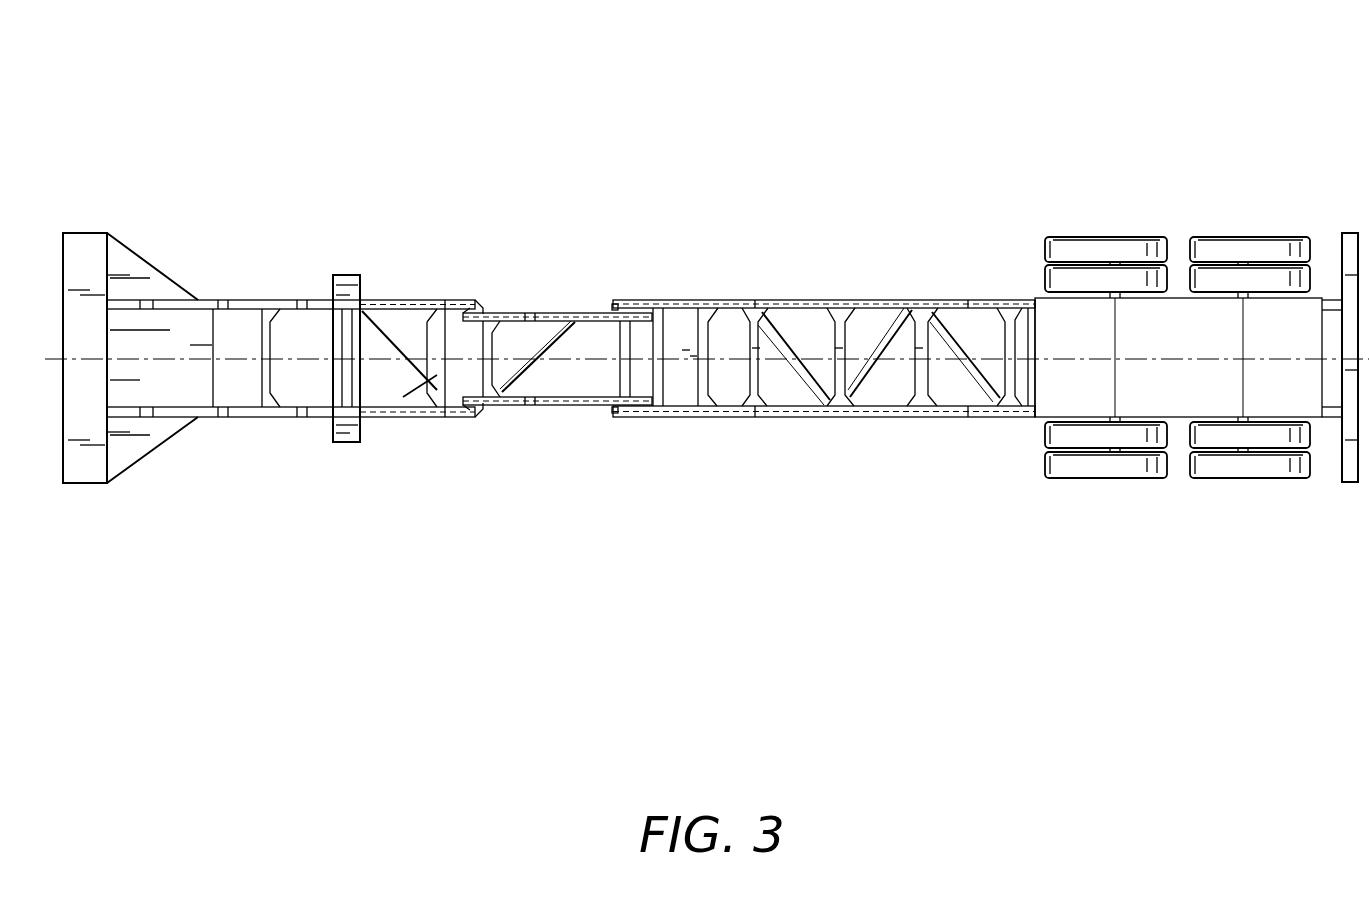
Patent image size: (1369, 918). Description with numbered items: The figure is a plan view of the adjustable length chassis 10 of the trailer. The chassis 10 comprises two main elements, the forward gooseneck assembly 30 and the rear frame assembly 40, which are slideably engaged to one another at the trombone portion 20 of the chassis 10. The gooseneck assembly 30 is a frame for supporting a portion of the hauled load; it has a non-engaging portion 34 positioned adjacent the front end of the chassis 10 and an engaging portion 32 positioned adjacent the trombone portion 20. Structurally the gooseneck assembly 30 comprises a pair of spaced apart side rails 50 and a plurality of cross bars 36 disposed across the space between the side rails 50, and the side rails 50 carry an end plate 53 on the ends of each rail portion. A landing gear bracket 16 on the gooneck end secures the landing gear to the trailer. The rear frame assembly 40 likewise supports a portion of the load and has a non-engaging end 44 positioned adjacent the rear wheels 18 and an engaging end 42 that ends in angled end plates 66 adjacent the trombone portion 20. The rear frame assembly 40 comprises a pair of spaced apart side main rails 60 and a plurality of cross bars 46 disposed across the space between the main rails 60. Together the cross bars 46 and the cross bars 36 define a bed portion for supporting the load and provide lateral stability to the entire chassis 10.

The adjustable length chassis 10 is at (1000, 110).
The landing gear bracket 16 is at (356, 276).
The wheels 18 is at (1092, 236).
The trombone portion 20 is at (557, 425).
The forward gooseneck assembly 30 is at (245, 333).
The engaging portion 32 is at (540, 291).
The non-engaging portion 34 is at (83, 218).
The cross bars 36 is at (472, 312).
The rear frame assembly 40 is at (873, 332).
The engaging end 42 is at (600, 291).
The non-engaging end 44 is at (1340, 218).
The cross bars 46 is at (712, 327).
The side rails 50 is at (300, 298).
The end plate 53 is at (470, 300).
The side main rails 60 is at (785, 300).
The angled end plate 66 is at (614, 300).